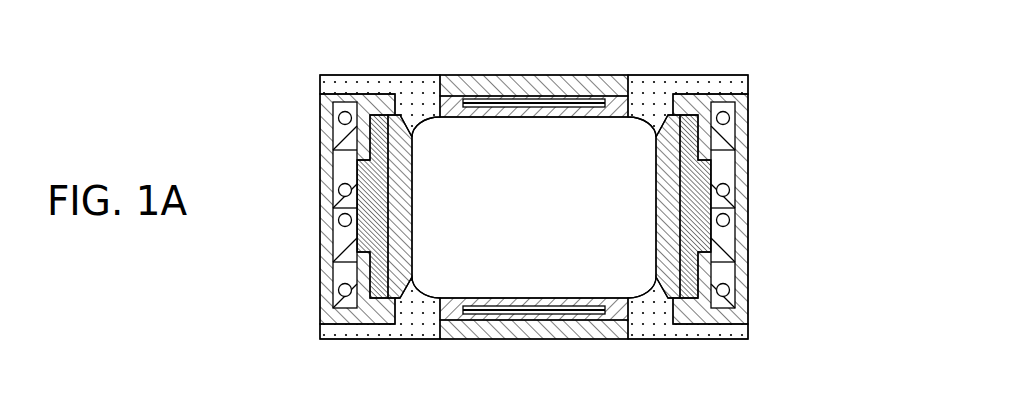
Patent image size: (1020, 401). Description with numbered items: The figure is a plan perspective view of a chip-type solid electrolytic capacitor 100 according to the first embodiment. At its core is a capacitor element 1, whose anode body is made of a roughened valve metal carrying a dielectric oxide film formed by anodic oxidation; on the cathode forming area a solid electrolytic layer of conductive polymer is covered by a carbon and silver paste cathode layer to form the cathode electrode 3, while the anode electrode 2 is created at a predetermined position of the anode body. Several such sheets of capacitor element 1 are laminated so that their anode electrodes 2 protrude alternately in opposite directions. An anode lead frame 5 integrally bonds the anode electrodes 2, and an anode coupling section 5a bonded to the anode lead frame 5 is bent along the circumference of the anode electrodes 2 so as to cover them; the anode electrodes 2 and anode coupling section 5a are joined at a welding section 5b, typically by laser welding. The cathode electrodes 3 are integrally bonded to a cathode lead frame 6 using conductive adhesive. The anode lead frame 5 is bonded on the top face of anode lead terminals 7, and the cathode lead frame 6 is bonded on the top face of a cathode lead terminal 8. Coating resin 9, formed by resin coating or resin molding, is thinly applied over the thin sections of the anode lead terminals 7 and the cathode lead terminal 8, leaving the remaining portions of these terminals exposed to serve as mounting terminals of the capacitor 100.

The chip-type solid electrolytic capacitor 100 is at (752, 77).
The capacitor element 1 is at (530, 149).
The anode electrode 2 is at (378, 120).
The cathode electrode 3 is at (692, 52).
The anode lead frame 5 is at (338, 137).
The anode coupling section 5a is at (340, 170).
The welding section 5b is at (727, 190).
The cathode lead frame 6 is at (448, 98).
The anode lead terminal 7 is at (325, 195).
The cathode lead terminal 8 is at (527, 85).
The coating resin 9 is at (325, 330).